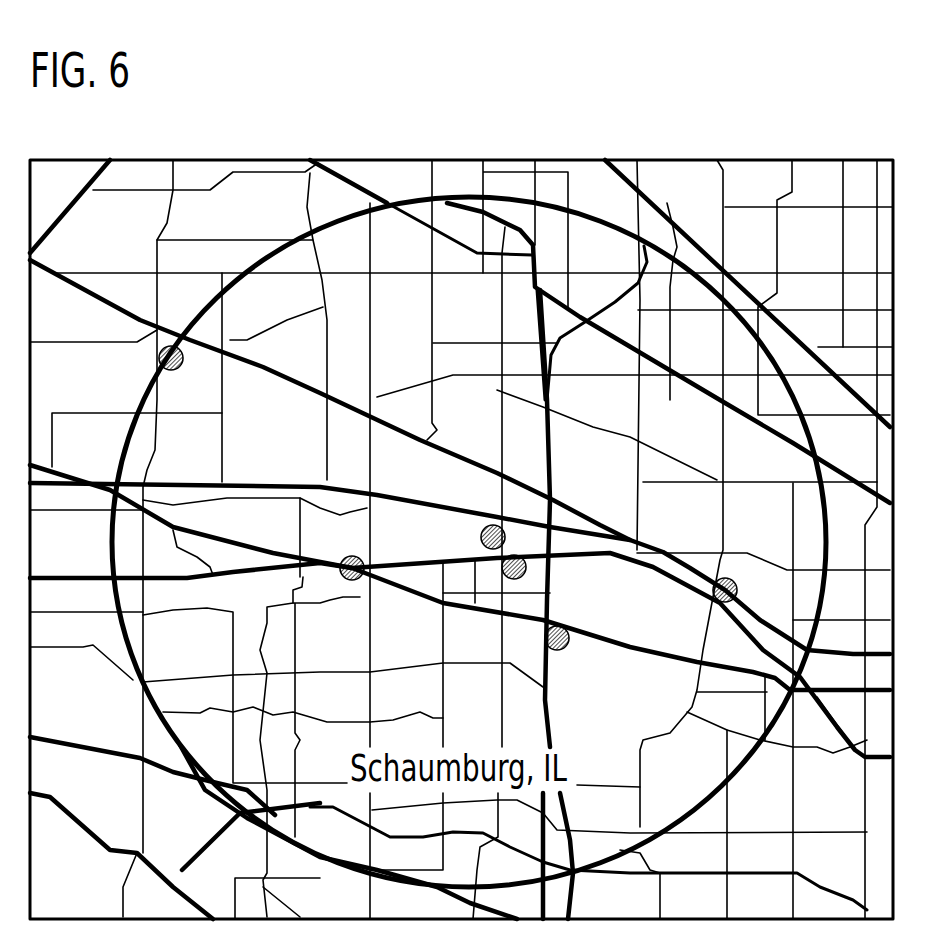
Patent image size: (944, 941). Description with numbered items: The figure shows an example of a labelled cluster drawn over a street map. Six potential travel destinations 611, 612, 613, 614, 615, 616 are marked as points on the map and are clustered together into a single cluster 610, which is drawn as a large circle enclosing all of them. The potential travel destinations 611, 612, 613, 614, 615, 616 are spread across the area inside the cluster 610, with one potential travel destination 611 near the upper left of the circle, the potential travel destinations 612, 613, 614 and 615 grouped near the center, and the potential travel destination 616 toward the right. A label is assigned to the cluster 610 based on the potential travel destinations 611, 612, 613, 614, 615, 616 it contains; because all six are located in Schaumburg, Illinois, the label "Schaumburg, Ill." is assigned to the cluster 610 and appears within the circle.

The cluster 610 is at (470, 197).
The potential travel destination 611 is at (182, 365).
The potential travel destination 612 is at (350, 580).
The potential travel destination 613 is at (480, 537).
The potential travel destination 614 is at (527, 573).
The potential travel destination 615 is at (557, 650).
The potential travel destination 616 is at (727, 577).